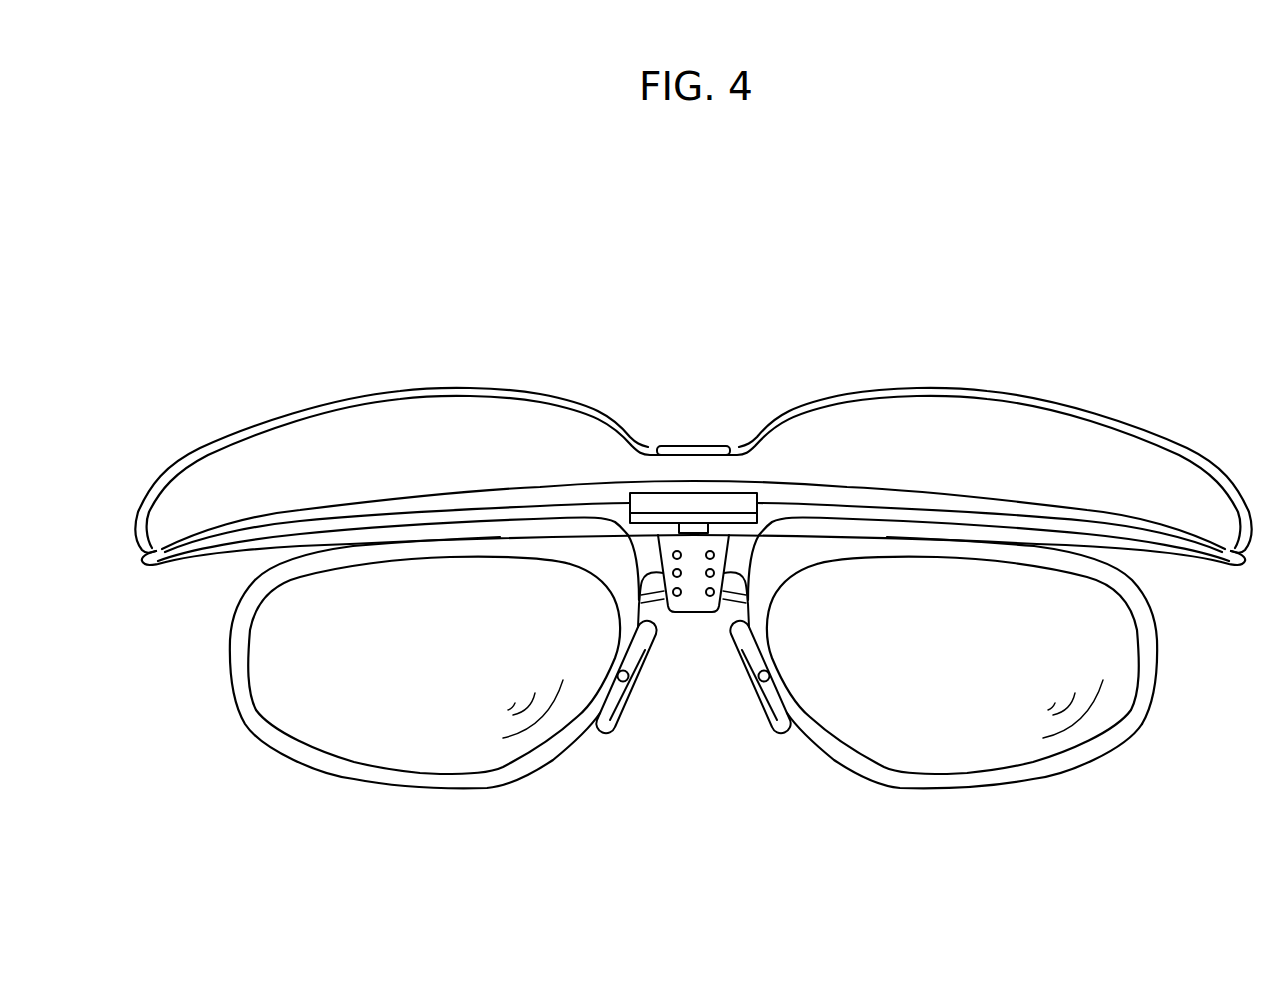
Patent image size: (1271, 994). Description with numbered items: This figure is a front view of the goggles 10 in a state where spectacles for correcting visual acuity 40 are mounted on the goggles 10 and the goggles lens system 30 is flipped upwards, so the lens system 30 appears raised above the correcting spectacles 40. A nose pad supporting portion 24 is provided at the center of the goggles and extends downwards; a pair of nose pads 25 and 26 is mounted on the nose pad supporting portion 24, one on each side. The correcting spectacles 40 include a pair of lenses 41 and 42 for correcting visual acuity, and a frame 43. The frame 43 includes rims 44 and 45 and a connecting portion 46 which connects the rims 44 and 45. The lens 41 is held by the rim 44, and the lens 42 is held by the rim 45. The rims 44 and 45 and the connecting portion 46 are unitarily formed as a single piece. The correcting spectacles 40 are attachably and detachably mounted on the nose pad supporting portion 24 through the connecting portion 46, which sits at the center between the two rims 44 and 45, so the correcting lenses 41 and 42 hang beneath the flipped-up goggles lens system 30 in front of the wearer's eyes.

The goggles 10 is at (323, 378).
The goggles lens system 30 is at (1079, 380).
The connecting portion 46 is at (740, 560).
The nose pad supporting portion 24 is at (694, 593).
The nose pad 26 is at (620, 733).
The nose pad 25 is at (767, 733).
The spectacles for correcting visual acuity 40 is at (495, 823).
The lens for correcting visual acuity 42 is at (372, 738).
The lens for correcting visual acuity 41 is at (1012, 742).
The rim 45 is at (247, 733).
The rim 44 is at (1135, 737).
The frame 43 is at (1160, 668).